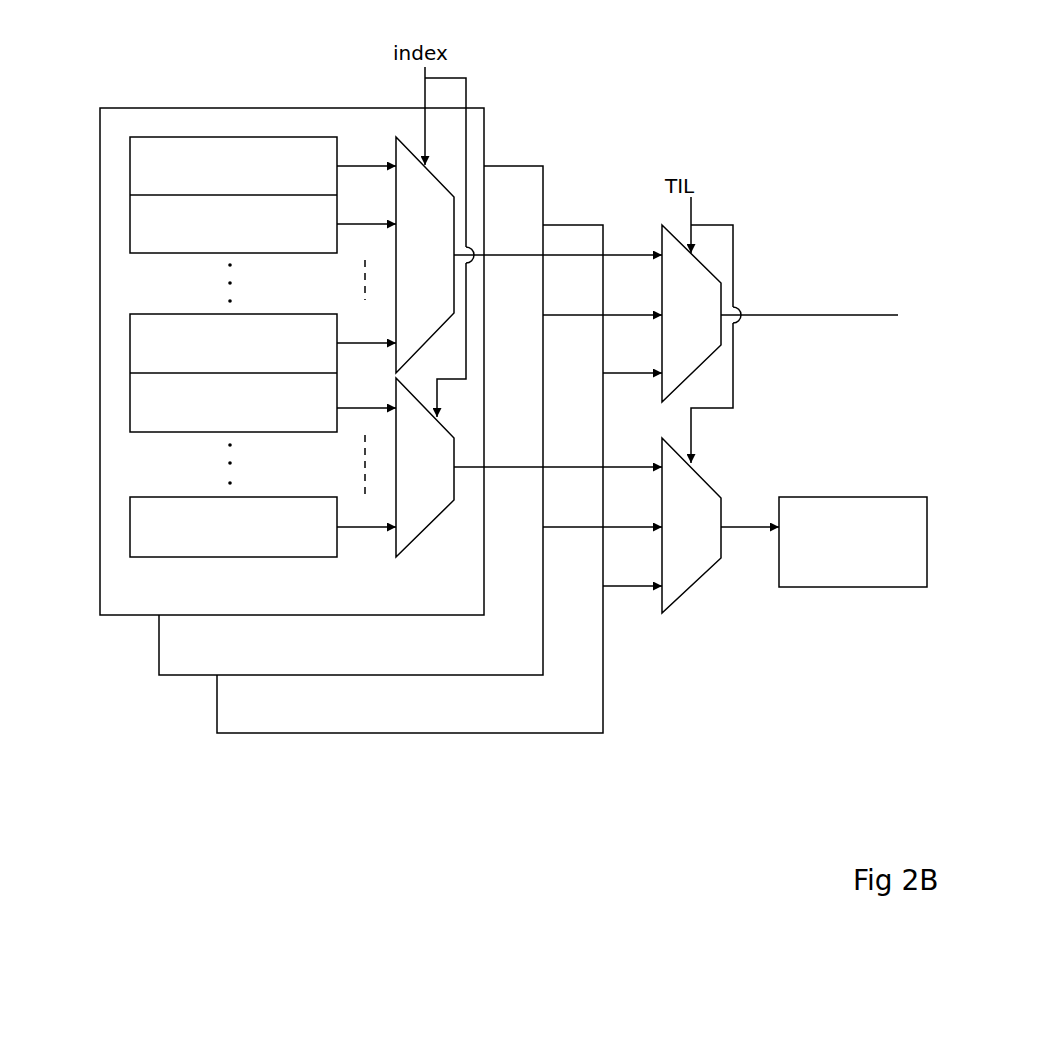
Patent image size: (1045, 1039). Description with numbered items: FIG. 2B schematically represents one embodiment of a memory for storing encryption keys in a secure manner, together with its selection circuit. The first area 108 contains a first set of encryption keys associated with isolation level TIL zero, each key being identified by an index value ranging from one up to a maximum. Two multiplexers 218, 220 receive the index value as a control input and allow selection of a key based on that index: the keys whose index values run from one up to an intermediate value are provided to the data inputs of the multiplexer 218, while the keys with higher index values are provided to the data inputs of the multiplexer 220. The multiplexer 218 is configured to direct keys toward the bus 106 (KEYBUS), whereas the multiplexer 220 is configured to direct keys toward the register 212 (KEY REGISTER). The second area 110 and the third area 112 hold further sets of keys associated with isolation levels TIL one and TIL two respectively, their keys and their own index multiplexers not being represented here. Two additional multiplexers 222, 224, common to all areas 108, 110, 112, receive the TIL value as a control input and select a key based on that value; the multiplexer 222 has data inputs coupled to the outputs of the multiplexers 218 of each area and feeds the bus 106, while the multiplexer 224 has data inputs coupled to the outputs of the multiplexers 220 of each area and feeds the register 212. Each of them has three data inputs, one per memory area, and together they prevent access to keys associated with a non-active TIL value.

The bus (KEYBUS) 106 is at (841, 316).
The first area 108 is at (99, 349).
The second area 110 is at (157, 656).
The third area 112 is at (295, 733).
The register (KEY REGISTER) 212 is at (850, 588).
The multiplexer 218 is at (436, 176).
The multiplexer 220 is at (427, 525).
The multiplexer 222 is at (707, 268).
The multiplexer 224 is at (688, 590).